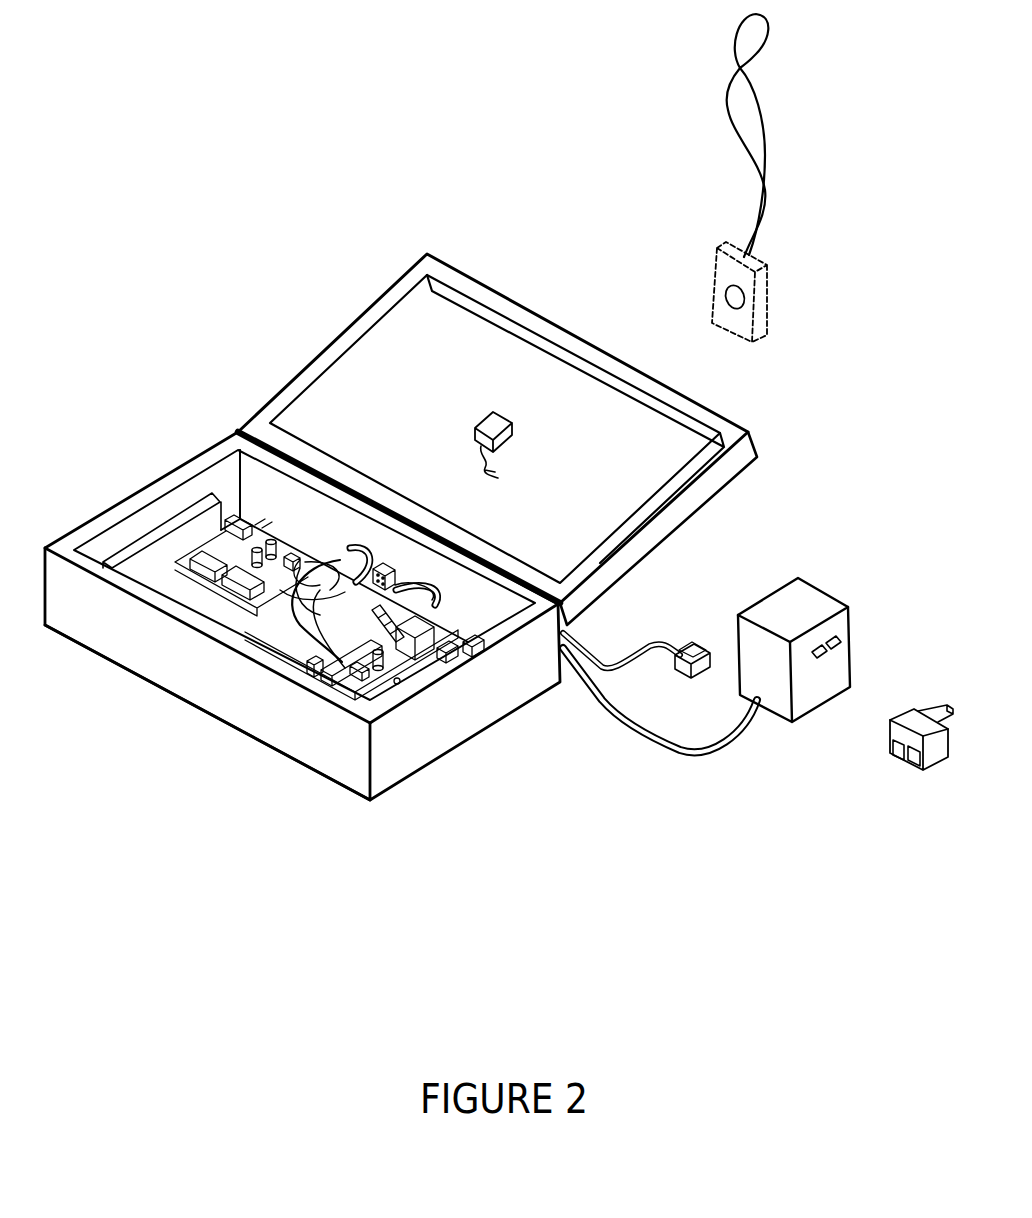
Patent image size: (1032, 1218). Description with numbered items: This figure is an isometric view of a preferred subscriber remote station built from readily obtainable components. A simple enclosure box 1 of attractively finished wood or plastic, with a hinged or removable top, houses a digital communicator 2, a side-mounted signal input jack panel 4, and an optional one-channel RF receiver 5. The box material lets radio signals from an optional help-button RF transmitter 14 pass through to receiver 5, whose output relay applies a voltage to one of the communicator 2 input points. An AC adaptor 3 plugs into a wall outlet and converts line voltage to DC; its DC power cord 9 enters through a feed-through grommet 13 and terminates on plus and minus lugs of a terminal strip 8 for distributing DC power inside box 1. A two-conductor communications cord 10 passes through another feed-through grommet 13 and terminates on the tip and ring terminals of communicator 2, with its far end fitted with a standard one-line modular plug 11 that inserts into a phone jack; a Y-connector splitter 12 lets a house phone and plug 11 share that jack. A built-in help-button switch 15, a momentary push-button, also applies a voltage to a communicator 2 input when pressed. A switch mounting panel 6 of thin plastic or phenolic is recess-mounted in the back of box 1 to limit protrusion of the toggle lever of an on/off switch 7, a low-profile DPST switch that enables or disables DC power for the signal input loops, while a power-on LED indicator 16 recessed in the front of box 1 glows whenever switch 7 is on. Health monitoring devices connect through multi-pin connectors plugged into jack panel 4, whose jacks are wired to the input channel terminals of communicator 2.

The enclosure box 1 is at (490, 712).
The digital communicator 2 is at (347, 693).
The AC adaptor 3 is at (803, 598).
The signal input jack panel 4 is at (233, 500).
The 1-channel RF receiver 5 is at (262, 522).
The switch mounting panel 6 is at (377, 560).
The on/off switch 7 is at (363, 587).
The terminal strip 8 is at (327, 563).
The DC power cord 9 is at (628, 726).
The two-conductor communications cord 10 is at (600, 668).
The 1-line modular plug 11 is at (700, 657).
The Y-connector splitter 12 is at (900, 718).
The feed-through grommet 13 is at (360, 548).
The help-button RF transmitter 14 is at (768, 298).
The help-button switch 15 is at (500, 413).
The power-on LED indicator 16 is at (204, 670).